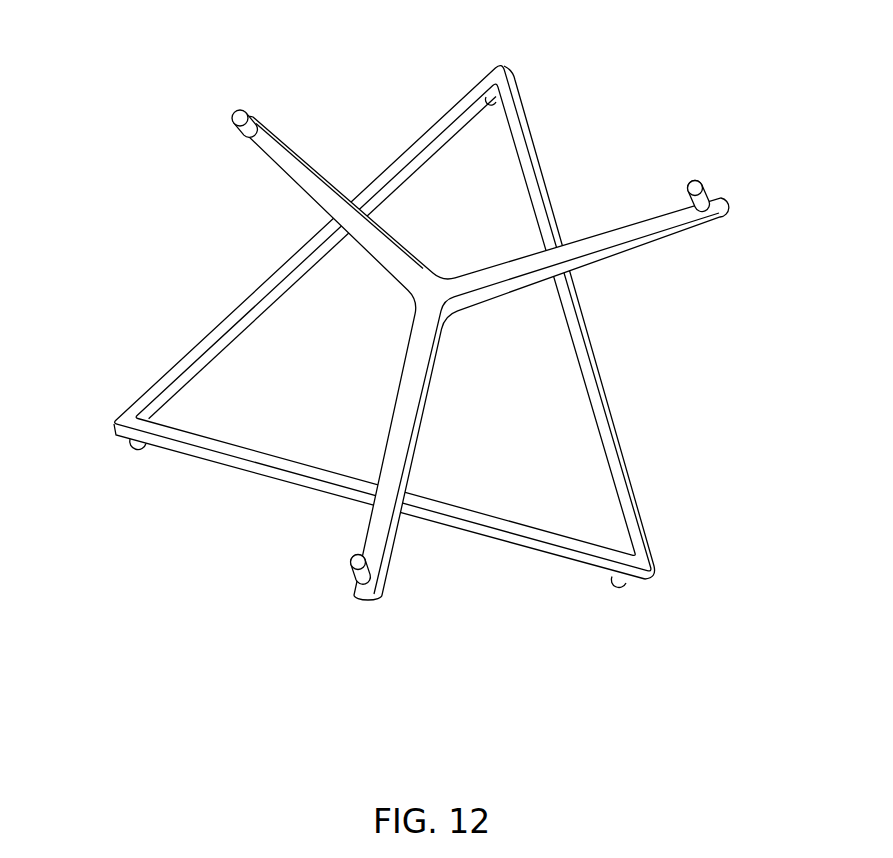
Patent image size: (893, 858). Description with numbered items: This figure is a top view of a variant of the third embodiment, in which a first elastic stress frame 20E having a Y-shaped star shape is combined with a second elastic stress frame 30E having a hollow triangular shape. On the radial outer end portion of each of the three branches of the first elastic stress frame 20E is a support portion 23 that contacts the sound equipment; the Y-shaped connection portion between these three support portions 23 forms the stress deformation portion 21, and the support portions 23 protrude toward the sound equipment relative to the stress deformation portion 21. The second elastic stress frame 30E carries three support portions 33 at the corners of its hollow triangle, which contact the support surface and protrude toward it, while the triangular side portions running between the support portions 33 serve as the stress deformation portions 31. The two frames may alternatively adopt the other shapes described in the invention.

The first elastic stress frame 20E is at (485, 357).
The stress deformation portion 21 is at (430, 292).
The support portion 23 is at (240, 110).
The second elastic stress frame 30E is at (376, 322).
The stress deformation portion 31 is at (253, 303).
The support portion 33 is at (491, 106).